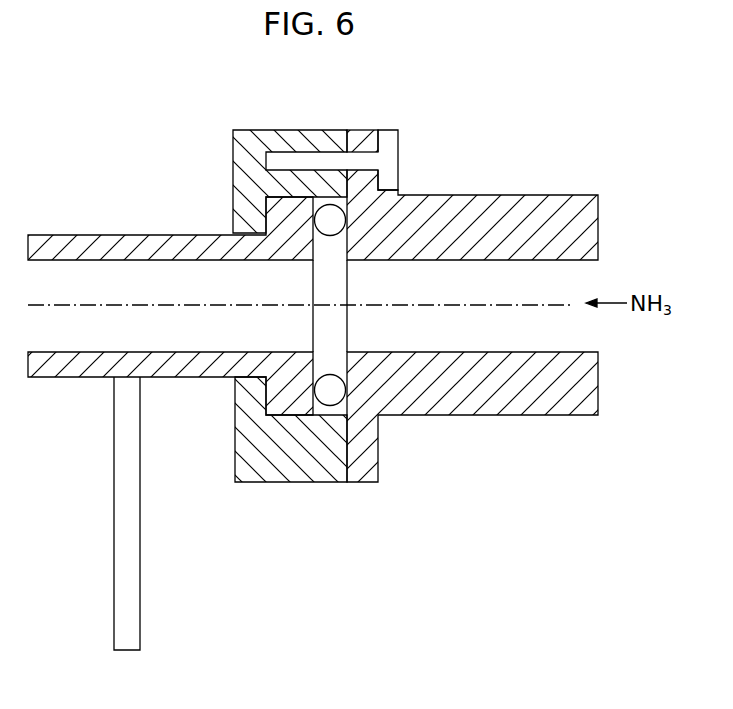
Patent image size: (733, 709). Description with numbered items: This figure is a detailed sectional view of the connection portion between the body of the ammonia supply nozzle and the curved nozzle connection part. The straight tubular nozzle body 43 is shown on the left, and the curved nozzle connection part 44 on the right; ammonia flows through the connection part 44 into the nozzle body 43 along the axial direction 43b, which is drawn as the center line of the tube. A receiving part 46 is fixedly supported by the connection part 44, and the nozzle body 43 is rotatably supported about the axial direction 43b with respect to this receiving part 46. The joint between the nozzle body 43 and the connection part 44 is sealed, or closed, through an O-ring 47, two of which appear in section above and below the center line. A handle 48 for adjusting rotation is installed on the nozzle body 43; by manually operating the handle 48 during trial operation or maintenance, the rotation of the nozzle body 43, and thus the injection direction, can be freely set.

The nozzle body 43 is at (183, 241).
The axial direction 43b is at (75, 305).
The curved nozzle connection part 44 is at (518, 200).
The receiving part 46 is at (288, 130).
The O-ring 47 is at (335, 225).
The handle 48 is at (133, 453).